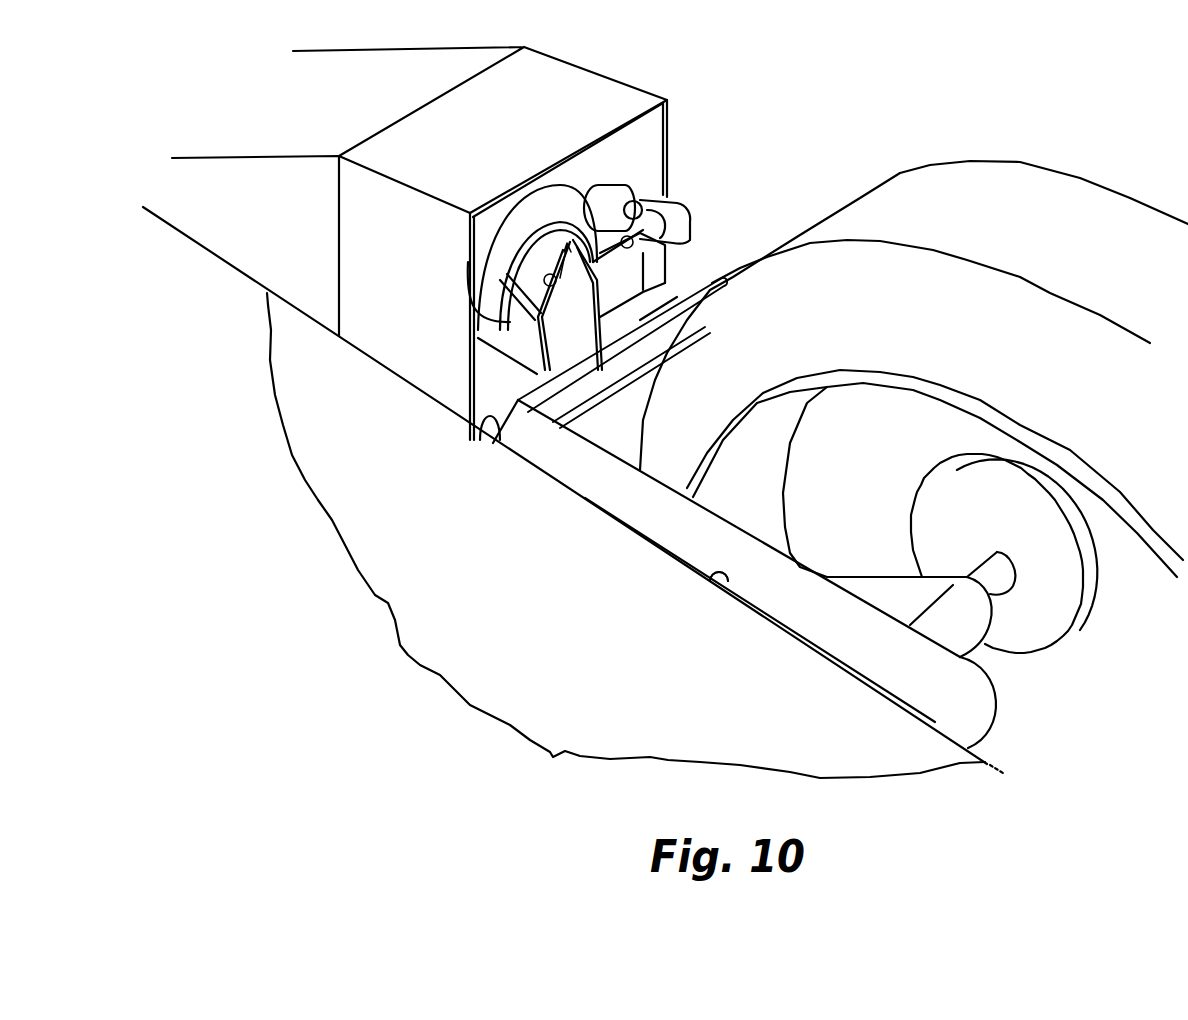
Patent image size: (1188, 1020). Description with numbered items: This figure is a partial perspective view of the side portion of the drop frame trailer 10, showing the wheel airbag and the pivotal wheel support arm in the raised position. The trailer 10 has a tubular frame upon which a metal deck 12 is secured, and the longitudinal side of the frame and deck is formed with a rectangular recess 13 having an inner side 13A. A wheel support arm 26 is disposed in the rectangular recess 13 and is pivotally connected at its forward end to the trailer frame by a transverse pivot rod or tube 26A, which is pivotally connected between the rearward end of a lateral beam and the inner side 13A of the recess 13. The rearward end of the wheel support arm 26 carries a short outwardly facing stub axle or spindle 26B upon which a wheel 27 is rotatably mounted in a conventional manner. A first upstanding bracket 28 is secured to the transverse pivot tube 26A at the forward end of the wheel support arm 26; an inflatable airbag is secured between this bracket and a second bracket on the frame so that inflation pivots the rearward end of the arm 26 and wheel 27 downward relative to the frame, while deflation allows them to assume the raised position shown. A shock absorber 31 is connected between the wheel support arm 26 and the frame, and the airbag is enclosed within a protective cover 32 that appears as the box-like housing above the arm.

The trailer 10 is at (855, 103).
The metal deck 12 is at (503, 594).
The rectangular recess 13 is at (716, 582).
The inner side 13A is at (719, 576).
The wheel support arm 26 is at (817, 625).
The transverse pivot rod or tube 26A is at (680, 270).
The stub axle or spindle 26B is at (990, 593).
The wheel 27 is at (1070, 193).
The first upstanding bracket 28 is at (510, 320).
The shock absorber 31 is at (617, 187).
The protective cover 32 is at (508, 134).